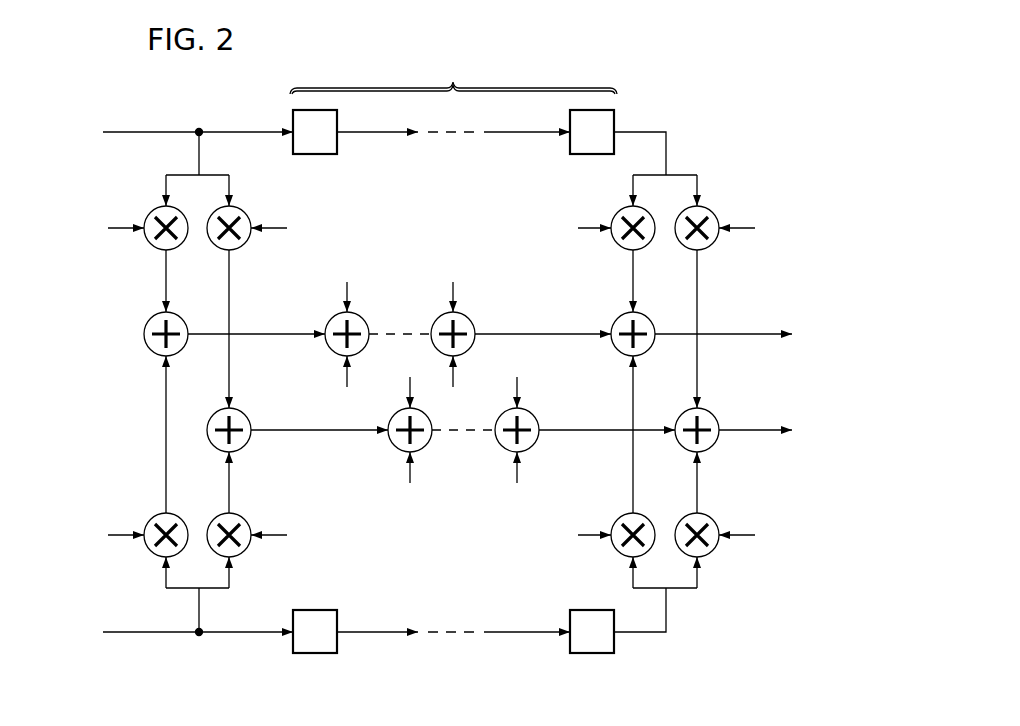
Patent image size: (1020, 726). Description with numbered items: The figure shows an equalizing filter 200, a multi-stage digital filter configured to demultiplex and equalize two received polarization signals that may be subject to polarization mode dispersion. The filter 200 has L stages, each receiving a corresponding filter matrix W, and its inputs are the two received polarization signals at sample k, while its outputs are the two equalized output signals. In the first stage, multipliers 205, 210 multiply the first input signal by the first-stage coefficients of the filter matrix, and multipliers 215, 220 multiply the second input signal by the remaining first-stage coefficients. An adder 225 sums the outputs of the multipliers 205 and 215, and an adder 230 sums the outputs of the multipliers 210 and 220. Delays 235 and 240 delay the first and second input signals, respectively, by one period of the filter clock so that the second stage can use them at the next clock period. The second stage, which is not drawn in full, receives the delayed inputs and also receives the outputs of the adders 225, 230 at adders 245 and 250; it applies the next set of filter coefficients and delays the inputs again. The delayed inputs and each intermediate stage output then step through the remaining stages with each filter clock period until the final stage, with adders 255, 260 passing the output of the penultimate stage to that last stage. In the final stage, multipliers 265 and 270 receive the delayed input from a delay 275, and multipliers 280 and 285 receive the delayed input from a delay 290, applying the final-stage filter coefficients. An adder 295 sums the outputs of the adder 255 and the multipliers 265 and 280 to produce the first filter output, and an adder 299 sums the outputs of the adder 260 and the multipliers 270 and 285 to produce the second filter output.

The equalizing filter 200 is at (690, 56).
The multiplier 205 is at (151, 212).
The multiplier 210 is at (245, 212).
The multiplier 215 is at (151, 552).
The multiplier 220 is at (245, 552).
The adder 225 is at (151, 318).
The adder 230 is at (245, 447).
The delay 235 is at (292, 120).
The delay 240 is at (292, 645).
The adder 245 is at (332, 318).
The adder 250 is at (394, 447).
The adder 255 is at (438, 318).
The adder 260 is at (533, 447).
The multiplier 265 is at (618, 212).
The multiplier 270 is at (712, 212).
The delay 275 is at (615, 120).
The multiplier 280 is at (618, 552).
The multiplier 285 is at (712, 552).
The delay 290 is at (615, 645).
The adder 295 is at (618, 318).
The adder 299 is at (713, 447).